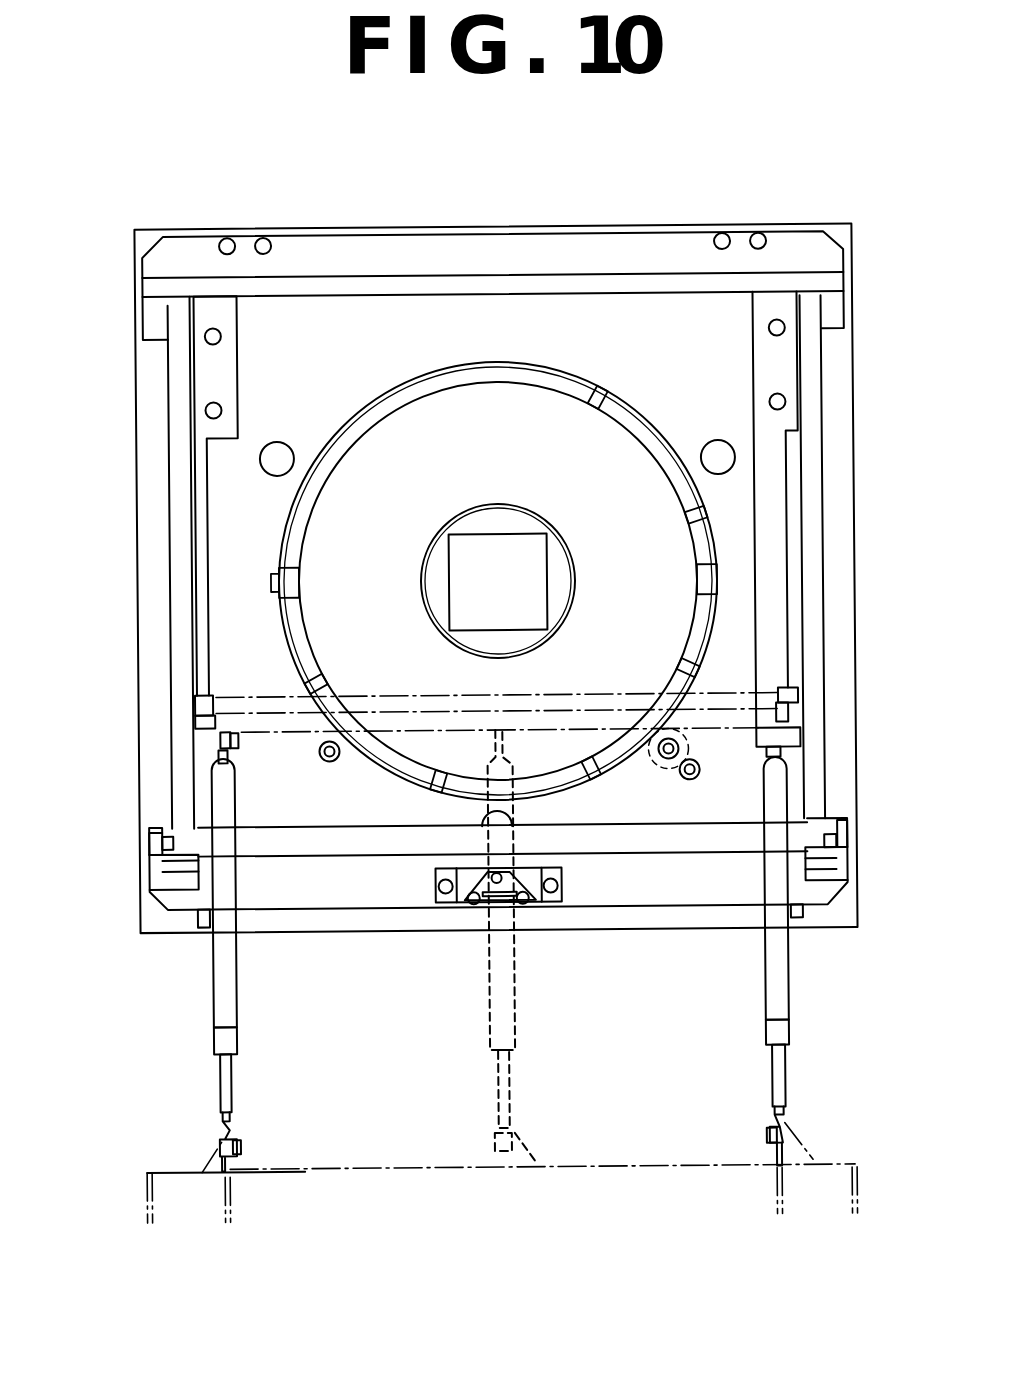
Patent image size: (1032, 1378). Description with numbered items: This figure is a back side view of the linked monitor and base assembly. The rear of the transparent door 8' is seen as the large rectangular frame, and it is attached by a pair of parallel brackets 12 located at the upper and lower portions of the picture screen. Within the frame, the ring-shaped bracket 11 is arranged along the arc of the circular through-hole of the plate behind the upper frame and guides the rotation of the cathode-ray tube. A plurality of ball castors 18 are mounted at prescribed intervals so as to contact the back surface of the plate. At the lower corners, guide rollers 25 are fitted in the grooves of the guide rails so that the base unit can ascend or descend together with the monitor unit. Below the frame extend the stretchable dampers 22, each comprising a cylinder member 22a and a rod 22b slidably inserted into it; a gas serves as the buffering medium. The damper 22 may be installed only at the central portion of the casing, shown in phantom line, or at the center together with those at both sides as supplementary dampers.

The transparent door 8' is at (462, 578).
The bracket 11 is at (494, 581).
The bracket 12 is at (828, 258).
The ball castor 18 is at (712, 445).
The stretchable damper 22 is at (512, 930).
The cylinder member 22a is at (230, 995).
The rod 22b is at (227, 1077).
The guide roller 25 is at (147, 865).